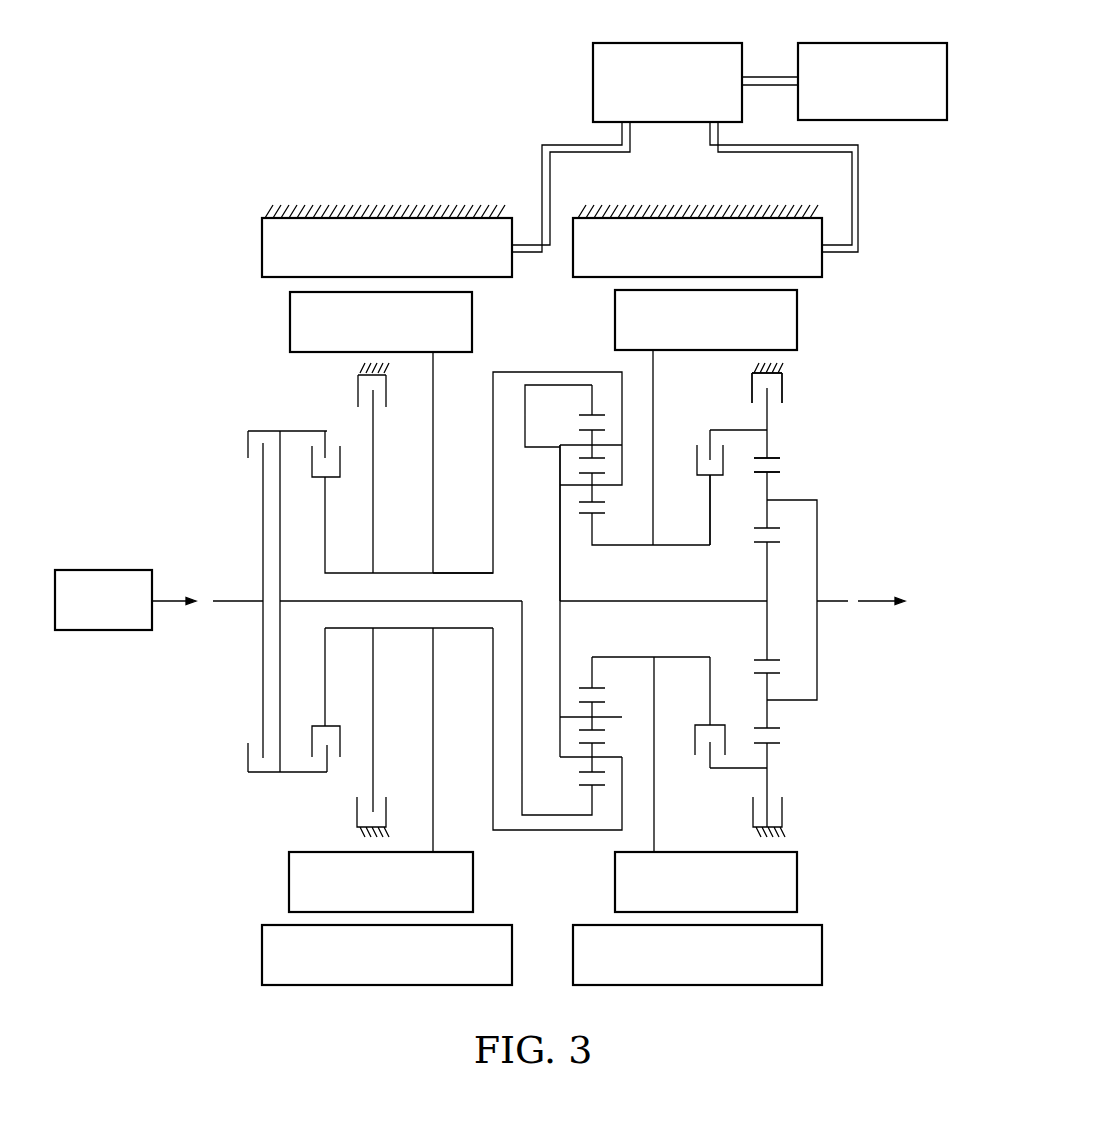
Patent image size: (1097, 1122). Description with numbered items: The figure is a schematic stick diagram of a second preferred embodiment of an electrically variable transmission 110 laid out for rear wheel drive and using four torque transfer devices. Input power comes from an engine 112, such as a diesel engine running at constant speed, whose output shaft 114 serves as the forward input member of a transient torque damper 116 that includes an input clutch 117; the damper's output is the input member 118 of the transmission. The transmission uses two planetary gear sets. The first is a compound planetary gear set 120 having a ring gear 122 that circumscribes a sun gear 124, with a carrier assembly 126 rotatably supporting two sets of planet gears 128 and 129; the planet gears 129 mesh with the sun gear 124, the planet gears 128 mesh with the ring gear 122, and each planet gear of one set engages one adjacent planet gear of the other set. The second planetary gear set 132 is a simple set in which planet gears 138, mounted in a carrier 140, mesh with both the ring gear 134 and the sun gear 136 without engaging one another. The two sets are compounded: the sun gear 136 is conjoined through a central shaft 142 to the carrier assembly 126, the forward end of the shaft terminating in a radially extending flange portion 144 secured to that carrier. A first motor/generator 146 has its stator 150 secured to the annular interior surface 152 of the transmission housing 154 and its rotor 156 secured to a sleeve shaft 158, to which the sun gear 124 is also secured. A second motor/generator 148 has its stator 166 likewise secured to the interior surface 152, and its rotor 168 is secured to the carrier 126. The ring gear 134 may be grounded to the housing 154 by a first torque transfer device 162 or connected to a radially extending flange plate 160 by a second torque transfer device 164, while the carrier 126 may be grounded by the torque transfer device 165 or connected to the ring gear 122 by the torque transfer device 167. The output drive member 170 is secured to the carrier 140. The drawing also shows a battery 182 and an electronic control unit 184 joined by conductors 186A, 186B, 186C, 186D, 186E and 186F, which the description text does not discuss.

The electrically variable transmission 110 is at (175, 316).
The engine 112 is at (118, 632).
The output shaft 114 is at (237, 600).
The transient torque damper 116 is at (238, 430).
The input clutch 117 is at (244, 466).
The input member 118 is at (305, 604).
The compound planetary gear set 120 is at (585, 394).
The ring gear 122 is at (583, 413).
The sun gear 124 is at (580, 516).
The carrier assembly 126 is at (553, 463).
The planet gears 128 is at (603, 428).
The planet gears 129 is at (603, 475).
The second planetary gear set 132 is at (752, 428).
The ring gear 134 is at (775, 458).
The sun gear 136 is at (775, 544).
The planet gears 138 is at (768, 474).
The carrier 140 is at (781, 493).
The central shaft 142 is at (628, 603).
The radially extending flange portion 144 is at (558, 576).
The first motor/generator 146 is at (727, 284).
The second motor/generator 148 is at (328, 281).
The stator 150 is at (573, 257).
The interior surface 152 is at (297, 212).
The transmission housing 154 is at (388, 363).
The rotor 156 is at (797, 330).
The sleeve shaft 158 is at (633, 546).
The radially extending flange plate 160 is at (710, 521).
The first torque transfer device 162 is at (750, 384).
The second torque transfer device 164 is at (704, 442).
The torque transfer device 165 is at (387, 423).
The stator 166 is at (262, 232).
The torque transfer device 167 is at (340, 428).
The rotor 168 is at (290, 320).
The output drive member 170 is at (875, 600).
The battery 182 is at (885, 43).
The electronic control unit 184 is at (593, 78).
The electrical conductor 186A is at (780, 77).
The electrical conductor 186B is at (782, 87).
The electrical conductor 186C is at (860, 185).
The electrical conductor 186D is at (855, 220).
The electrical conductor 186E is at (563, 153).
The electrical conductor 186F is at (620, 153).